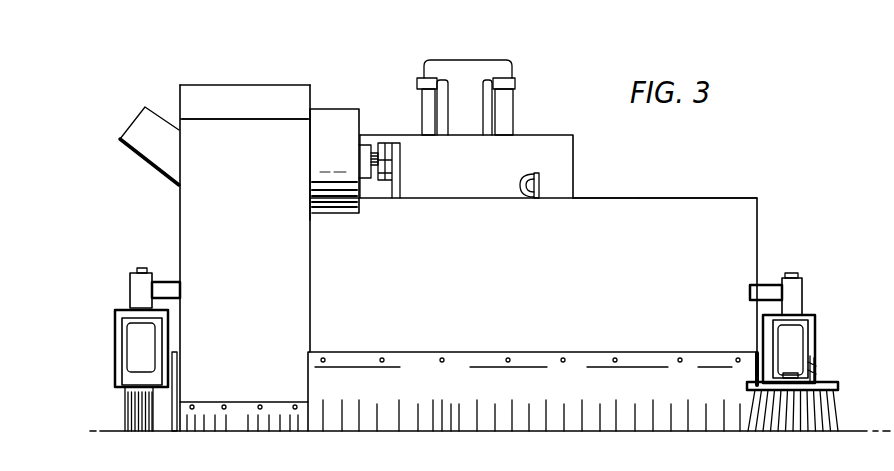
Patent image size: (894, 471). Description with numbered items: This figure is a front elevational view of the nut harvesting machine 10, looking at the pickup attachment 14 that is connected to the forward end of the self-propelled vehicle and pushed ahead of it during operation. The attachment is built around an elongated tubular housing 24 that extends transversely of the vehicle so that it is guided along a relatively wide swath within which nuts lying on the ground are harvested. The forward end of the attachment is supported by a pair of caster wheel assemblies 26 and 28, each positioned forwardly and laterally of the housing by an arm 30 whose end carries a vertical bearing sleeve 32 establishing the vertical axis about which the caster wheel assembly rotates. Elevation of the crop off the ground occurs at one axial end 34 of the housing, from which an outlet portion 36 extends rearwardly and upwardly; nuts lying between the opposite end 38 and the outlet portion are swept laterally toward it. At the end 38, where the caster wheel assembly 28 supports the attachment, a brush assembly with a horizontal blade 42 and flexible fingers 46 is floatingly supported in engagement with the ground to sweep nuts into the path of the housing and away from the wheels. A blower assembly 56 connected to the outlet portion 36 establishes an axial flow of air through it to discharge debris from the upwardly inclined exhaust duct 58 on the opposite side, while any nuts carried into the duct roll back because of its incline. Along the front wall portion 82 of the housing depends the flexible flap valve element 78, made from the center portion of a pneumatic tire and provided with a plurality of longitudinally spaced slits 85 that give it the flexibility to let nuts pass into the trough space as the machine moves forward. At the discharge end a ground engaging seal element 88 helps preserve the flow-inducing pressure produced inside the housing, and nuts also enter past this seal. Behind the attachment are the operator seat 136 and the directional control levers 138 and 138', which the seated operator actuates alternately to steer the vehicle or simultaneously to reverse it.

The harvesting machine 10 is at (226, 81).
The pickup attachment 14 is at (600, 194).
The tubular housing 24 is at (658, 196).
The caster wheel assembly 26 is at (107, 375).
The caster wheel assembly 28 is at (823, 313).
The arm 30 is at (167, 292).
The vertical bearing sleeve 32 is at (130, 292).
The axial end 34 is at (187, 220).
The outlet portion 36 is at (252, 155).
The end 38 is at (755, 235).
The horizontal blade 42 is at (817, 382).
The flexible fingers 46 is at (830, 417).
The blower assembly 56 is at (335, 130).
The exhaust duct 58 is at (161, 120).
The flap valve element 78 is at (623, 370).
The front wall portion 82 is at (455, 302).
The slits 85 is at (434, 414).
The ground engaging seal element 88 is at (237, 415).
The seat 136 is at (505, 110).
The directional control lever 138 is at (430, 81).
The second control lever 138' is at (486, 82).